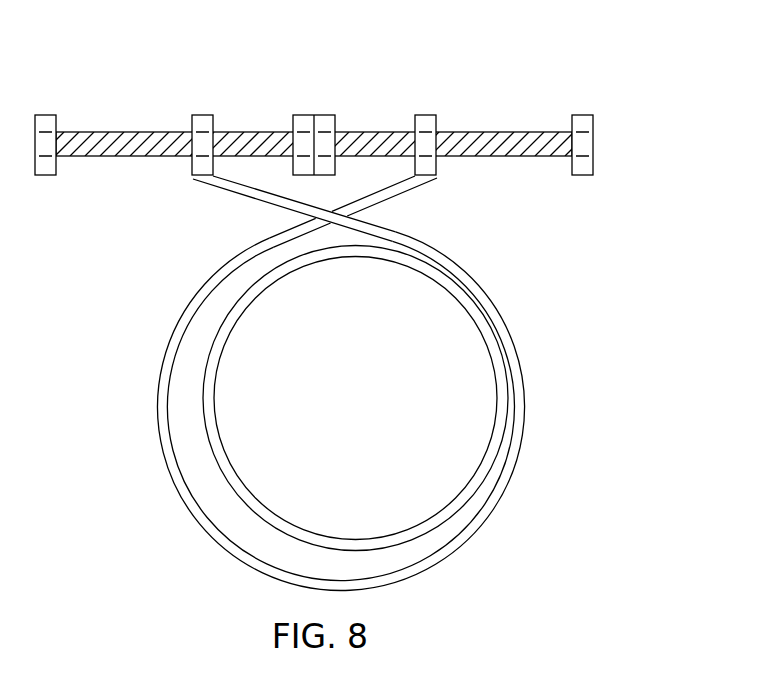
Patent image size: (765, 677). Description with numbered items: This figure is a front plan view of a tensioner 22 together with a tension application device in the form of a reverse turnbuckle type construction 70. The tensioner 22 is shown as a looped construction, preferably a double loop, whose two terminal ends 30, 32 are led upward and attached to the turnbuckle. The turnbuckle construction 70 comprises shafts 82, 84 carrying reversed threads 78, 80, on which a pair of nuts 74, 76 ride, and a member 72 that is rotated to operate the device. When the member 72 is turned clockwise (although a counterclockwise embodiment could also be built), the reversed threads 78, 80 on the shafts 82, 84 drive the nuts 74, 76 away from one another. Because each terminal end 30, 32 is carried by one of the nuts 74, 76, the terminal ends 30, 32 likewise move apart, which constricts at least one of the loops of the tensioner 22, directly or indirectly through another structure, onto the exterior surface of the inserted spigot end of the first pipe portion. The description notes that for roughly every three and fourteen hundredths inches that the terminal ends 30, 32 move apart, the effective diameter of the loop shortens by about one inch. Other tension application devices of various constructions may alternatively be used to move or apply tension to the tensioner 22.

The tensioner 22 is at (279, 383).
The terminal end 30 is at (418, 180).
The terminal end 32 is at (222, 185).
The reverse turnbuckle type construction 70 is at (359, 91).
The member 72 is at (610, 144).
The nut 74 is at (200, 115).
The nut 76 is at (425, 115).
The reversed thread 78 is at (138, 147).
The reversed thread 80 is at (512, 143).
The shaft 82 is at (115, 212).
The shaft 84 is at (560, 182).